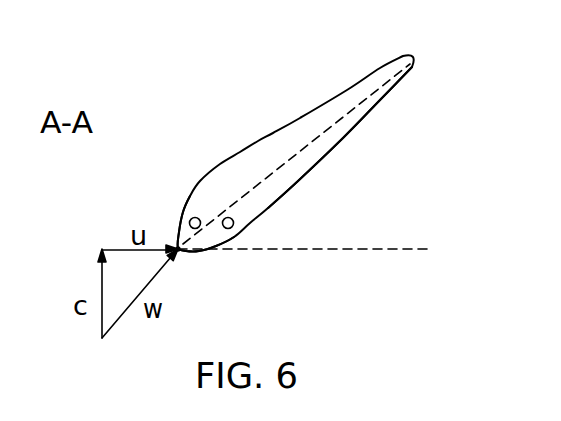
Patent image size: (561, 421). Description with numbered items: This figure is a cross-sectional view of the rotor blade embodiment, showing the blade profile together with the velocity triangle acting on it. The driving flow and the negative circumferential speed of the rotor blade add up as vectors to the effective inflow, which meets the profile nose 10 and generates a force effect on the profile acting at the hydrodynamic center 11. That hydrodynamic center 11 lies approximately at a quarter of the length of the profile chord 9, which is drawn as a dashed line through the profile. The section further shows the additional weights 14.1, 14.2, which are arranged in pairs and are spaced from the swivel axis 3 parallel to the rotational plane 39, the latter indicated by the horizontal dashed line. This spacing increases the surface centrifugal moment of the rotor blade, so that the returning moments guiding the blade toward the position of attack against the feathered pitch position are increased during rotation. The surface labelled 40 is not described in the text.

The swivel axis 3 is at (211, 228).
The profile chord 9 is at (349, 112).
The profile nose 10 is at (178, 248).
The hydrodynamic center 11 is at (242, 200).
The additional weight 14.1 is at (188, 216).
The additional weight 14.2 is at (228, 216).
The rotational plane 39 is at (327, 250).
The pressure side surface 40 is at (378, 100).